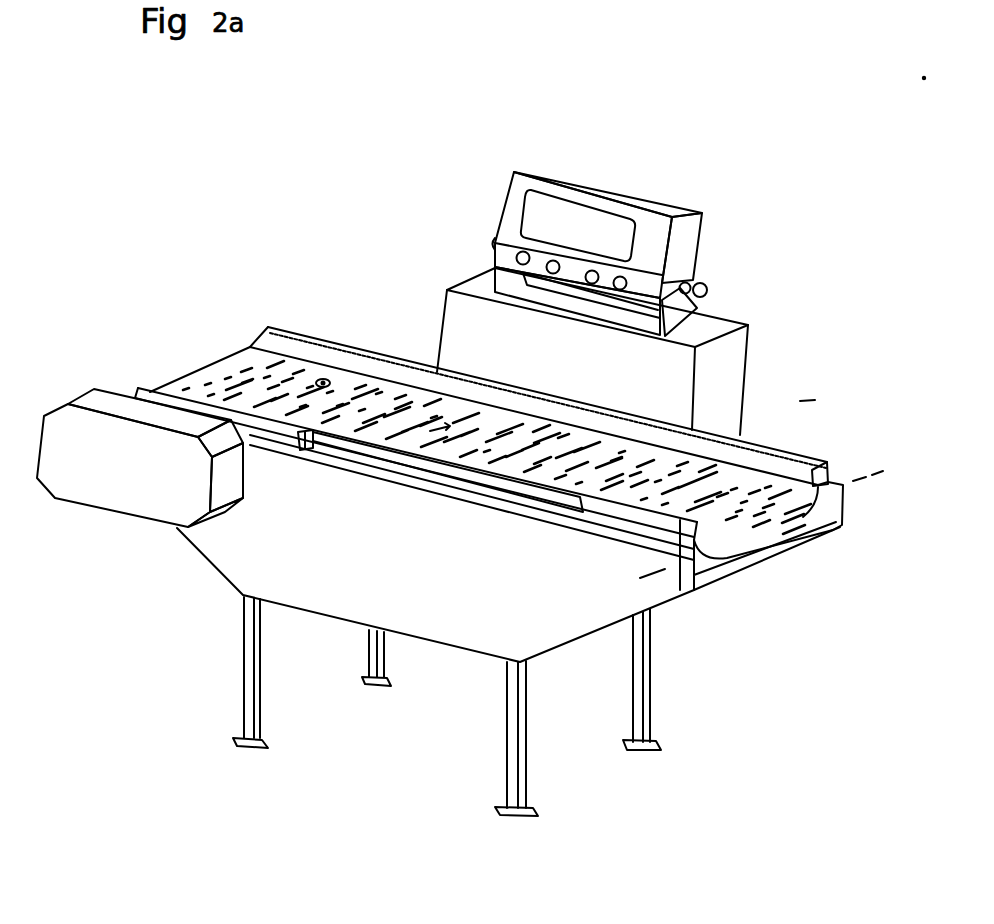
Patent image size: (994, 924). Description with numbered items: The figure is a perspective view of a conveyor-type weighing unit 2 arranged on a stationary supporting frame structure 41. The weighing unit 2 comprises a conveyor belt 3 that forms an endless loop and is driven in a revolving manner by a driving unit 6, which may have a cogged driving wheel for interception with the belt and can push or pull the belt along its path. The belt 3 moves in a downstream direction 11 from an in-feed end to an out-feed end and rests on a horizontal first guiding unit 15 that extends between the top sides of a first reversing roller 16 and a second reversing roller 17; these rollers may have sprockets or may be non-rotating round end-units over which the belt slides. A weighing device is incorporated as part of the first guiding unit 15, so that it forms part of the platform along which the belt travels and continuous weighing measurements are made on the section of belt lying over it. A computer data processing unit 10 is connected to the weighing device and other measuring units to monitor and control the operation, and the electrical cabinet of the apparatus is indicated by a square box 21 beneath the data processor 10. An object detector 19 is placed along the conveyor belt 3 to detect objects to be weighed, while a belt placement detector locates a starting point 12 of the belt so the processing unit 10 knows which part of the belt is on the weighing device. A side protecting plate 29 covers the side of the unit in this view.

The conveyor-type weighing unit 2 is at (289, 182).
The conveyor belt 3 is at (237, 368).
The driving unit 6 is at (72, 480).
The computer data processing unit 10 is at (513, 173).
The downstream direction 11 is at (342, 407).
The starting point 12 is at (323, 370).
The first guiding unit 15 is at (660, 447).
The first reversing roller 16 is at (133, 388).
The second reversing roller 17 is at (710, 557).
The object detector 19 is at (300, 433).
The electrical cabinet 21 is at (445, 287).
The side protecting plate 29 is at (550, 633).
The supporting frame structure 41 is at (247, 632).